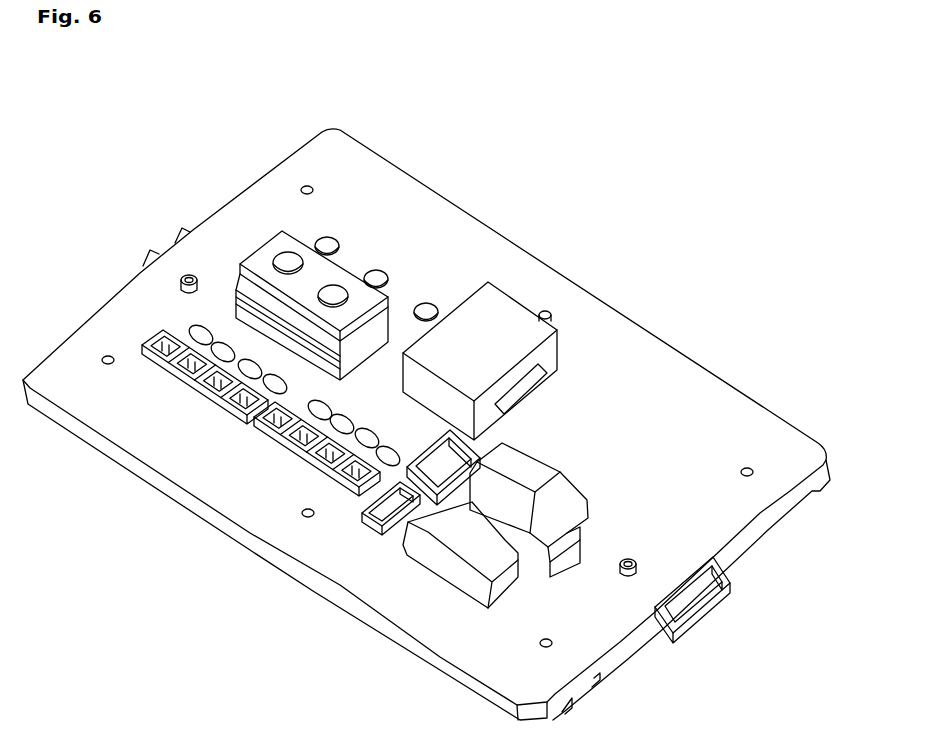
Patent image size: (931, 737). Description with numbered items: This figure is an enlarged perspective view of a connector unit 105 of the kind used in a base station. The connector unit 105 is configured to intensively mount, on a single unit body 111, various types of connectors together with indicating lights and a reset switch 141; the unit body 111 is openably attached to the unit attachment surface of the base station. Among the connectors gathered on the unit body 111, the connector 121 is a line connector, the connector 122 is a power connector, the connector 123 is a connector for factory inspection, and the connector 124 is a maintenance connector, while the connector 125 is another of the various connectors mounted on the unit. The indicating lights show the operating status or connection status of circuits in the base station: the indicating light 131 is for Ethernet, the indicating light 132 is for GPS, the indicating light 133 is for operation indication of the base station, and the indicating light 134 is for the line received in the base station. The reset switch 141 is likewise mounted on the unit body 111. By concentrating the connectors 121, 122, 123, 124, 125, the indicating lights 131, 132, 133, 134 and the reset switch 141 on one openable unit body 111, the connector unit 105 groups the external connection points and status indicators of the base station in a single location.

The connector unit 105 is at (603, 298).
The unit body 111 is at (748, 411).
The line connector 121 is at (147, 362).
The power connector 122 is at (588, 520).
The connector for factory inspection 123 is at (368, 530).
The maintenance connector 124 is at (478, 440).
The connector 125 is at (550, 368).
The indicating light for Ethernet 131 is at (439, 304).
The indicating light for GPS 132 is at (386, 272).
The indicating light for operation indication 133 is at (338, 240).
The indicating light for line received 134 is at (200, 333).
The reset switch 141 is at (267, 248).